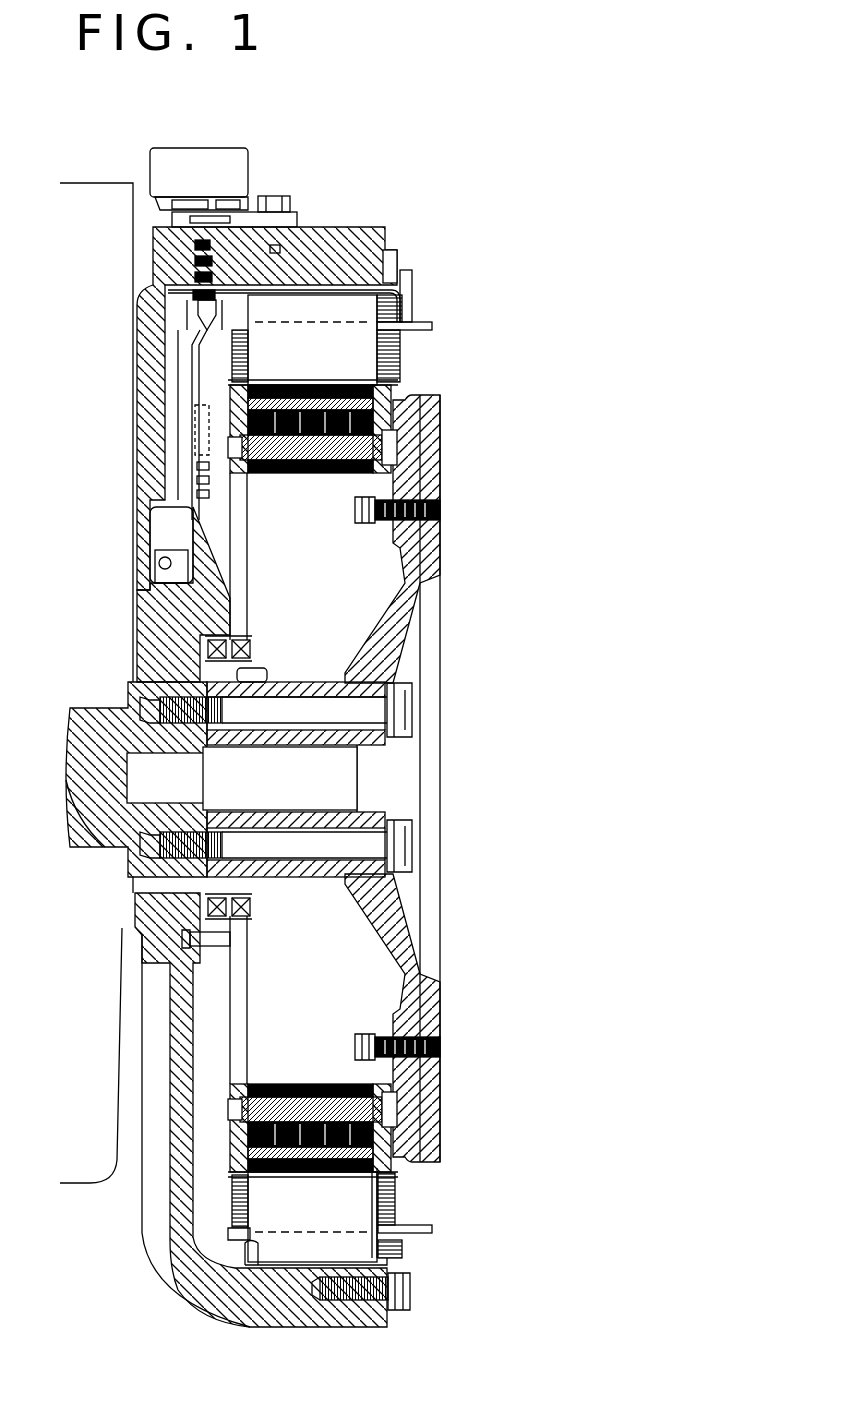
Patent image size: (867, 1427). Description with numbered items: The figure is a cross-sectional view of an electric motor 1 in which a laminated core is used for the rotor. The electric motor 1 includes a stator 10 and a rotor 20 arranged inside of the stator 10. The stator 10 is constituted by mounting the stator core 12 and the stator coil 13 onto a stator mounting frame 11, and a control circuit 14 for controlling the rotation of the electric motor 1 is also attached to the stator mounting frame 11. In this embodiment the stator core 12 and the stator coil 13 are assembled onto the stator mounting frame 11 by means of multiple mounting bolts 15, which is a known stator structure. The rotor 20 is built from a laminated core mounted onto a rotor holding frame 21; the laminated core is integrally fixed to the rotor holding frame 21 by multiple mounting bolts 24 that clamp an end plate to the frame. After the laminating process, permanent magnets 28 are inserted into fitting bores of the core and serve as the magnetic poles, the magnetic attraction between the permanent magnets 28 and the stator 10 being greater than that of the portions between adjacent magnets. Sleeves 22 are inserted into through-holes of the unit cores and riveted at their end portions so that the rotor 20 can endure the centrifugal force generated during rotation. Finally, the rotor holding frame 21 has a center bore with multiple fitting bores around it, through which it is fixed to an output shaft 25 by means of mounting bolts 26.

The electric motor 1 is at (388, 212).
The stator 10 is at (420, 305).
The stator mounting frame 11 is at (372, 1320).
The stator core 12 is at (395, 1210).
The stator coil 13 is at (395, 1195).
The control circuit 14 is at (195, 462).
The mounting bolt 15 is at (170, 410).
The rotor 20 is at (455, 388).
The rotor holding frame 21 is at (430, 548).
The sleeve 22 is at (385, 448).
The mounting bolt 24 is at (352, 505).
The output shaft 25 is at (92, 718).
The mounting bolt 26 is at (398, 712).
The permanent magnet 28 is at (395, 400).